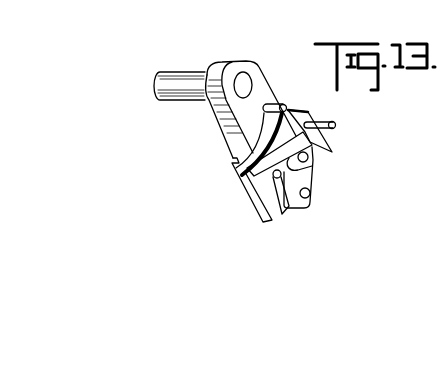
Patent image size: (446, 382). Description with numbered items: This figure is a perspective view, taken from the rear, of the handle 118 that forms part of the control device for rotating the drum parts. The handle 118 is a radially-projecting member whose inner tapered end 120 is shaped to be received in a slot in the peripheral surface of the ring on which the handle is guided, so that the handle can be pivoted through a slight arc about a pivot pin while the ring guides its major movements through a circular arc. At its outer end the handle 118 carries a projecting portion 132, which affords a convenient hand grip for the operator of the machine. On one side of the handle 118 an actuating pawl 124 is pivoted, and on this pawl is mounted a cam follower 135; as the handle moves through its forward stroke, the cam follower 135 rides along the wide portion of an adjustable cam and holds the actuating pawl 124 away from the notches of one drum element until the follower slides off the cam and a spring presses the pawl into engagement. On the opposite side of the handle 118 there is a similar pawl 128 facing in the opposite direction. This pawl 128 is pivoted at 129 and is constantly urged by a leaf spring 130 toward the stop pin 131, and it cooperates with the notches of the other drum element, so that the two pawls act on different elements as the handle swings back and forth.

The handle 118 is at (266, 63).
The inner tapered end 120 is at (310, 202).
The actuating pawl 124 is at (330, 152).
The pawl 128 is at (257, 201).
The pivot 129 is at (308, 158).
The leaf spring 130 is at (250, 133).
The stop pin 131 is at (283, 214).
The projecting portion 132 is at (178, 72).
The cam follower 135 is at (336, 125).